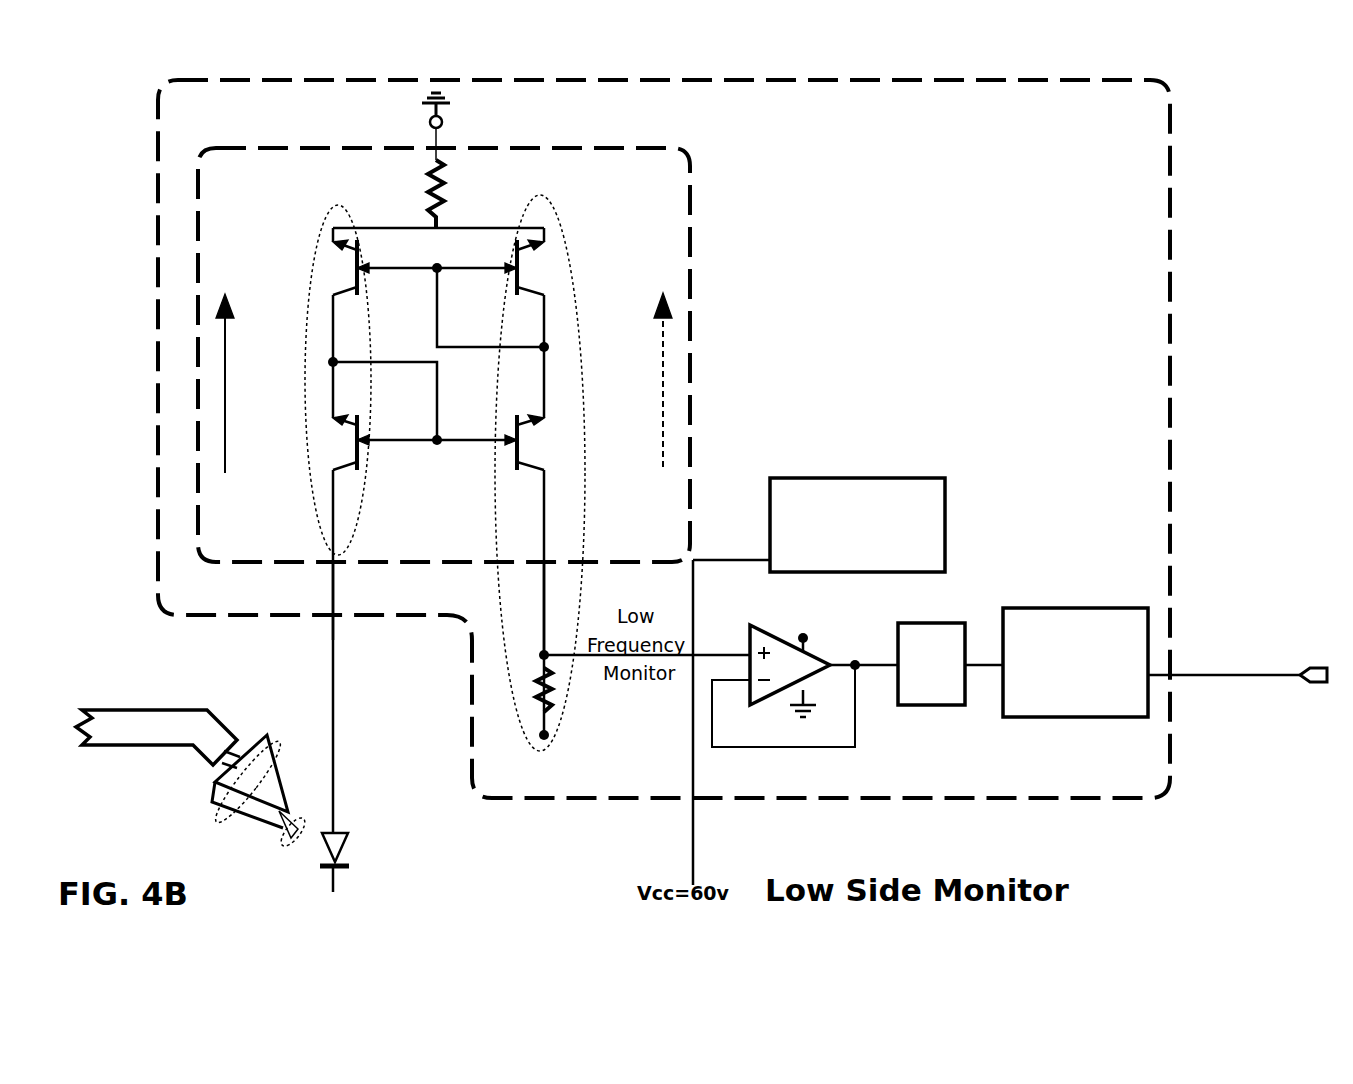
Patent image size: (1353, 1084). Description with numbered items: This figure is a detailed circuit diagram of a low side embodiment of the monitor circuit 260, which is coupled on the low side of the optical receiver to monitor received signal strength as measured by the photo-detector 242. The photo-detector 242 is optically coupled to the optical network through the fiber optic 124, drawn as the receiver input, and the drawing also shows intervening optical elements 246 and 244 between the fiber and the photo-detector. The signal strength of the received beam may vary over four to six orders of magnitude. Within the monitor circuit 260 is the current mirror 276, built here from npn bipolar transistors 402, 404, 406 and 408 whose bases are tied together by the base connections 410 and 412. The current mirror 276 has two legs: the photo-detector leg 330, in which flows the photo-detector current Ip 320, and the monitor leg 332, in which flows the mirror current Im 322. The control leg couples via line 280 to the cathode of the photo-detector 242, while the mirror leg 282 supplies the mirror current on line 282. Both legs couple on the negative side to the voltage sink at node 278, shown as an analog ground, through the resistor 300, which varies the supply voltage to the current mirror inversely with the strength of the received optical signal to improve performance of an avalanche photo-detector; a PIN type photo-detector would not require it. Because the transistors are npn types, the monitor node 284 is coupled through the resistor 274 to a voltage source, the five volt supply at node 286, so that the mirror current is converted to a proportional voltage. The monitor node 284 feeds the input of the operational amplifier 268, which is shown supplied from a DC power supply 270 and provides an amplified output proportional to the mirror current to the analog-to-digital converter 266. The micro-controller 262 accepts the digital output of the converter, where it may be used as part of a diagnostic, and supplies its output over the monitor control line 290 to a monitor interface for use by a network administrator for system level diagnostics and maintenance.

The fiber optic 124 is at (130, 708).
The photo-detector 242 is at (348, 850).
The focus spot 244 is at (286, 843).
The lens 246 is at (217, 822).
The monitor circuit 260 is at (1172, 455).
The micro-controller 262 is at (1108, 606).
The analog-to-digital converter 266 is at (937, 611).
The operational amplifier 268 is at (775, 628).
The DC power supply 270 is at (947, 503).
The resistor 274 is at (550, 688).
The current mirror 276 is at (692, 226).
The voltage sink node 278 is at (430, 108).
The line 280 is at (333, 645).
The mirror leg 282 is at (546, 608).
The monitor node 284 is at (540, 655).
The Vcc node 286 is at (550, 740).
The monitor control line 290 is at (1322, 658).
The resistor 300 is at (428, 160).
The photo-detector current Ip 320 is at (227, 411).
The mirror current Im 322 is at (662, 409).
The photo-detector leg 330 is at (340, 206).
The monitor leg 332 is at (537, 200).
The npn transistor 402 is at (364, 272).
The npn transistor 404 is at (510, 272).
The npn transistor 406 is at (508, 446).
The npn transistor 408 is at (364, 446).
The upper base connection 410 is at (437, 262).
The lower base connection 412 is at (437, 434).